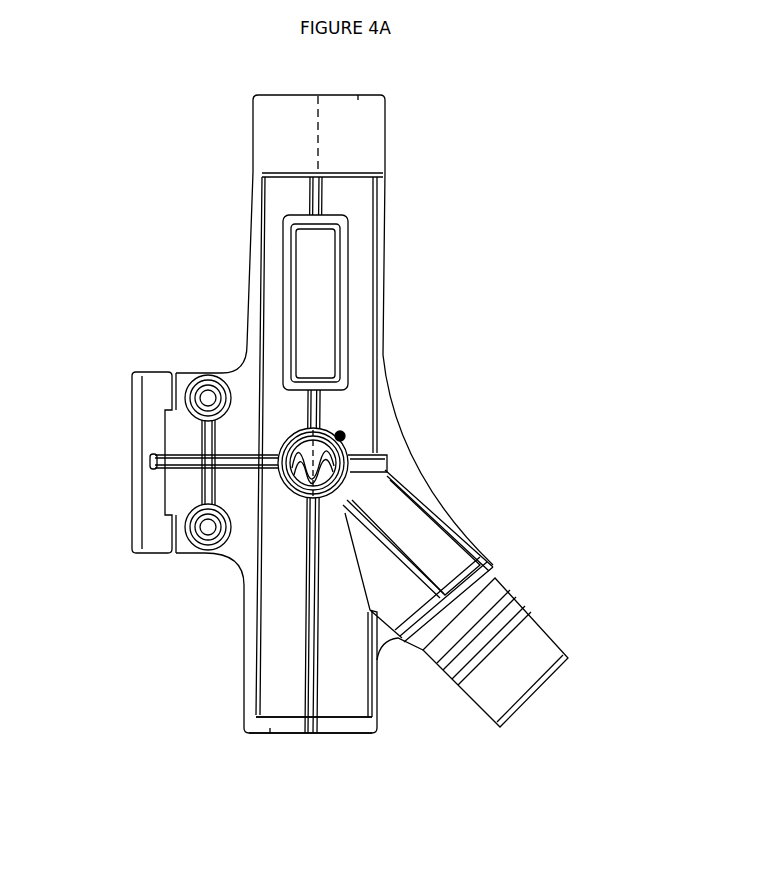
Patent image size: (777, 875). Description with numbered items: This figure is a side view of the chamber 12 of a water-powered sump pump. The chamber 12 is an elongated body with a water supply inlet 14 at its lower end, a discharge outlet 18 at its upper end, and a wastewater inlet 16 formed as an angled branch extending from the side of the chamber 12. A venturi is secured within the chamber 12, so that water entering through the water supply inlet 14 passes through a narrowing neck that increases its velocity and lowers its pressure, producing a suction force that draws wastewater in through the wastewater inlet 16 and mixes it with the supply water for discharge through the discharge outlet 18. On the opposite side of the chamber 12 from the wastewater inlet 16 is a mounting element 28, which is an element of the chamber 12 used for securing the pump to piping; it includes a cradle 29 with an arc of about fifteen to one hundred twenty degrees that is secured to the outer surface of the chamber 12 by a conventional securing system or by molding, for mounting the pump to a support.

The chamber 12 is at (363, 293).
The water supply inlet 14 is at (337, 735).
The wastewater inlet 16 is at (545, 687).
The discharge outlet 18 is at (265, 95).
The mounting element 28 is at (237, 547).
The cradle 29 is at (132, 542).